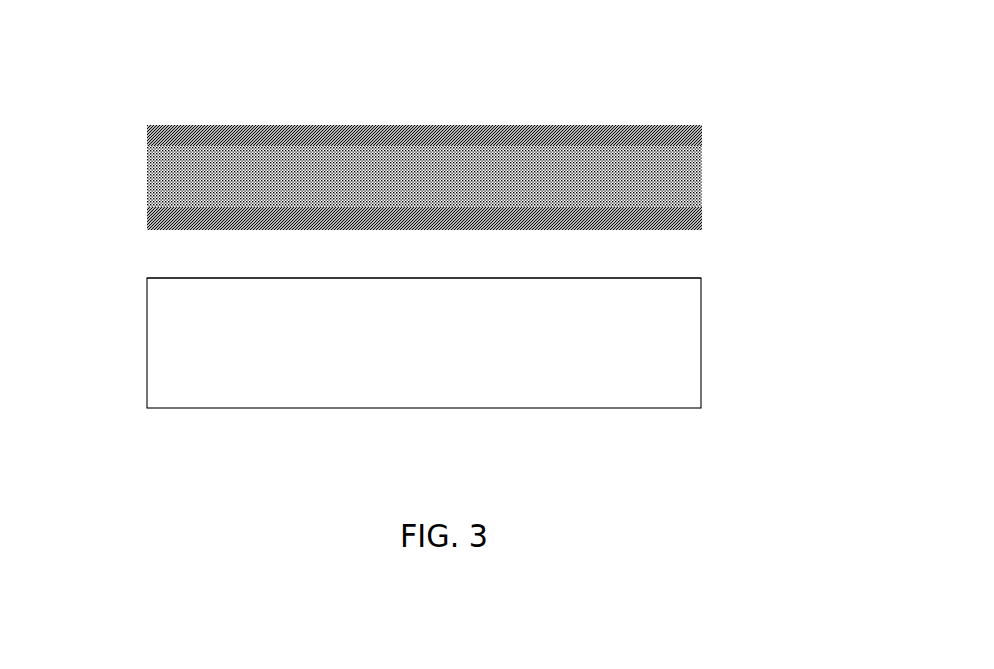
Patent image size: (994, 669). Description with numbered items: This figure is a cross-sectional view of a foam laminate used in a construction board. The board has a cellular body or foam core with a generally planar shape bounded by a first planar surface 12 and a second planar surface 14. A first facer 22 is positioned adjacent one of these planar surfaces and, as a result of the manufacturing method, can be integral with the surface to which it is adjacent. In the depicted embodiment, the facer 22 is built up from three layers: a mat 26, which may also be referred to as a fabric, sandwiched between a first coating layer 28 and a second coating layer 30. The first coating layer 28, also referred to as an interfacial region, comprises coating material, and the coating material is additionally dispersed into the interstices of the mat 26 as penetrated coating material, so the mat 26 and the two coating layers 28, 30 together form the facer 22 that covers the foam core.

The first planar surface 12 is at (467, 326).
The second planar surface 14 is at (675, 278).
The first facer 22 is at (452, 133).
The mat 26 is at (680, 183).
The first coating layer 28 is at (688, 227).
The second coating layer 30 is at (633, 138).